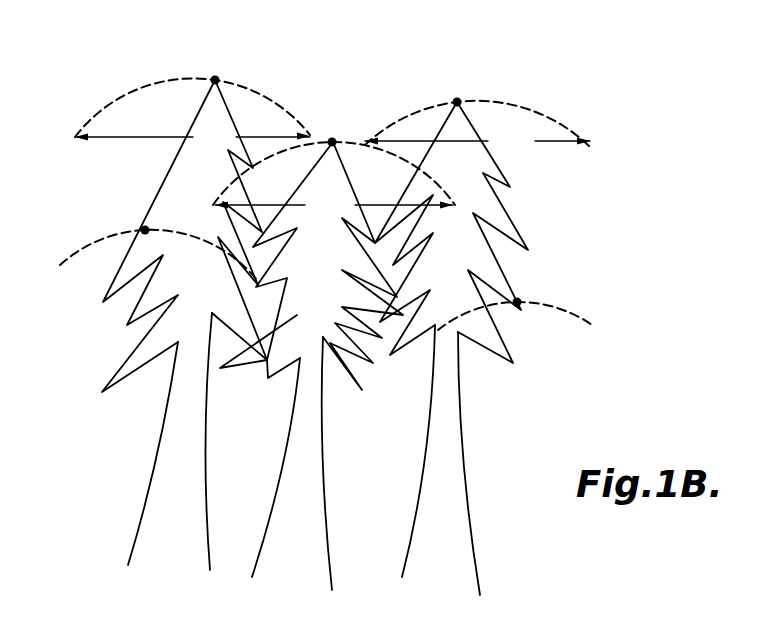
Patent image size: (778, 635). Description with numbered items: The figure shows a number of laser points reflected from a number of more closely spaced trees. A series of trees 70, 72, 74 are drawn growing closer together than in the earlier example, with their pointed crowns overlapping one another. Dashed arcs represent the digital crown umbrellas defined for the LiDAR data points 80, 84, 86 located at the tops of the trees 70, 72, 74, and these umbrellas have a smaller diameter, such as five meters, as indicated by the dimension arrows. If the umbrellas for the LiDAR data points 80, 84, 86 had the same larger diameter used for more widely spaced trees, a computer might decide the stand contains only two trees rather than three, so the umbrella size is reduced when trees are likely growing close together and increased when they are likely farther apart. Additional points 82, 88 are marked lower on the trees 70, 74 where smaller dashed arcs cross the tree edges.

The tree 70 is at (177, 167).
The tree 72 is at (338, 167).
The tree 74 is at (507, 212).
The LiDAR data point 80 is at (214, 78).
The lower point on first tree 82 is at (145, 232).
The LiDAR data point 84 is at (332, 140).
The LiDAR data point 86 is at (458, 101).
The lower point on third tree 88 is at (517, 302).